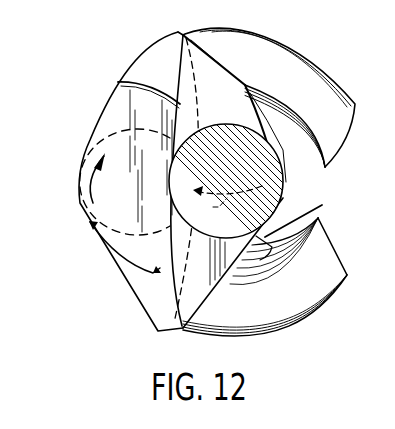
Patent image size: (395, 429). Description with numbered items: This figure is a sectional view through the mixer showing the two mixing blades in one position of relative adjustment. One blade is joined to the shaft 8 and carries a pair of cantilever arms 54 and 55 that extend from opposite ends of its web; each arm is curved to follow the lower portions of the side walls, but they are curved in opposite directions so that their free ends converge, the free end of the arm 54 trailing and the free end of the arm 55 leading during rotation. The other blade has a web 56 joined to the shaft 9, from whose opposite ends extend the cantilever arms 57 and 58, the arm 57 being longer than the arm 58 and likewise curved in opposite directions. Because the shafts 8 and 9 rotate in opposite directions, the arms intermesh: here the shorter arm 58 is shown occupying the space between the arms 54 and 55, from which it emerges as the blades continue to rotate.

The shaft 8 is at (280, 200).
The shaft 9 is at (85, 158).
The cantilever arm 54 is at (323, 80).
The cantilever arm 55 is at (322, 298).
The web 56 is at (112, 102).
The cantilever arm 57 is at (277, 145).
The cantilever arm 58 is at (322, 205).